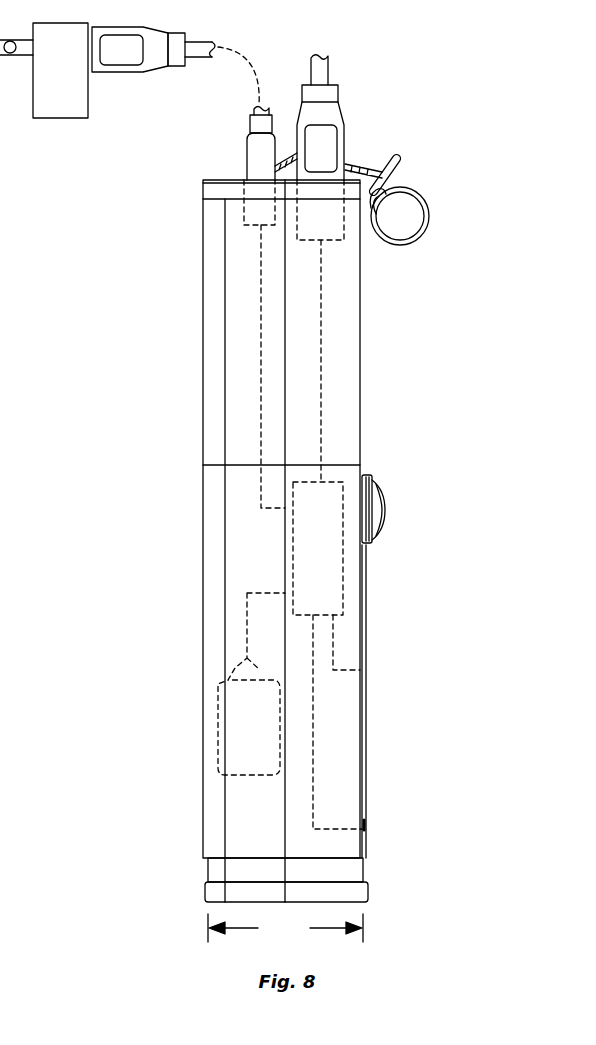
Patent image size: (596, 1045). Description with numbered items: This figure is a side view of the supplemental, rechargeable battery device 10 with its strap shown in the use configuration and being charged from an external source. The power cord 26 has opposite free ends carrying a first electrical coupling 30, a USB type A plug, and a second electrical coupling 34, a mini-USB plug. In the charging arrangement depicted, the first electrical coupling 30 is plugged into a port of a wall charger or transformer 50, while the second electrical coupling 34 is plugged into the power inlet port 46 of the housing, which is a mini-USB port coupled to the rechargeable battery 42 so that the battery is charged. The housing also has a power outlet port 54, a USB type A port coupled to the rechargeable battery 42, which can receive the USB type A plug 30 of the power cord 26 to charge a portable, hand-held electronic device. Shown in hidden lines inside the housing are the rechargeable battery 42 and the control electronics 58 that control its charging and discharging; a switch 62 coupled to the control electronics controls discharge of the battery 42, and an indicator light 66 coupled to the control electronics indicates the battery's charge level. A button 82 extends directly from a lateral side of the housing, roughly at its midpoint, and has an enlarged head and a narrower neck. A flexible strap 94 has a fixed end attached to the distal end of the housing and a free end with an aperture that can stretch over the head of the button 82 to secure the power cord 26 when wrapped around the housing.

The supplemental, rechargeable battery device 10 is at (182, 818).
The power cord 26 is at (200, 40).
The first electrical coupling 30 is at (337, 140).
The second electrical coupling 34 is at (247, 138).
The rechargeable battery 42 is at (212, 712).
The power inlet port 46 is at (240, 218).
The wall charger or transformer 50 is at (62, 102).
The power outlet port 54 is at (333, 248).
The control electronics 58 is at (290, 530).
The switch 62 is at (362, 670).
The indicator light 66 is at (366, 823).
The button 82 is at (383, 518).
The flexible strap 94 is at (422, 238).